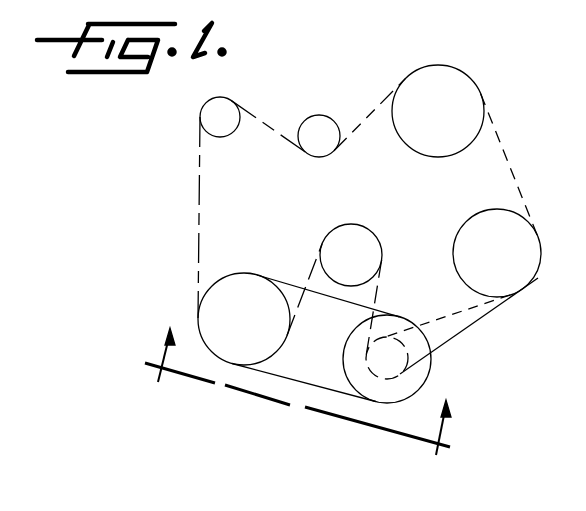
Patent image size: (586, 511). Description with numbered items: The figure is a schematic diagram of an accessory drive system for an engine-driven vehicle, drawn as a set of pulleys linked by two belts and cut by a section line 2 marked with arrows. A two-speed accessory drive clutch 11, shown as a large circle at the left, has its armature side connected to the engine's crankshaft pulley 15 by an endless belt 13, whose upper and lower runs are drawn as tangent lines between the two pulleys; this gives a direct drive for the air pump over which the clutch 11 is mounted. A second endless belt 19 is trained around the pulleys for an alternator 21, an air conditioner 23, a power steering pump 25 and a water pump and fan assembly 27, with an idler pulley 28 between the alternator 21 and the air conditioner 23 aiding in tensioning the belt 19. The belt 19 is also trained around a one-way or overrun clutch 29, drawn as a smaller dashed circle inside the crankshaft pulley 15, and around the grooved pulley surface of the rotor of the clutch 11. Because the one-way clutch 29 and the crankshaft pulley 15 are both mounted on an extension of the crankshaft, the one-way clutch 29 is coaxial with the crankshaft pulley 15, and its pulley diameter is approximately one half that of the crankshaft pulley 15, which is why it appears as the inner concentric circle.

The two-speed accessory drive clutch 11 is at (210, 308).
The endless belt 13 is at (303, 383).
The crankshaft pulley 15 is at (421, 372).
The second endless belt 19 is at (200, 205).
The alternator 21 is at (207, 105).
The air conditioner 23 is at (462, 78).
The power steering pump 25 is at (540, 272).
The water pump and fan assembly 27 is at (365, 230).
The idler pulley 28 is at (318, 115).
The one-way clutch 29 is at (412, 345).
The section line 2- 2 is at (298, 410).